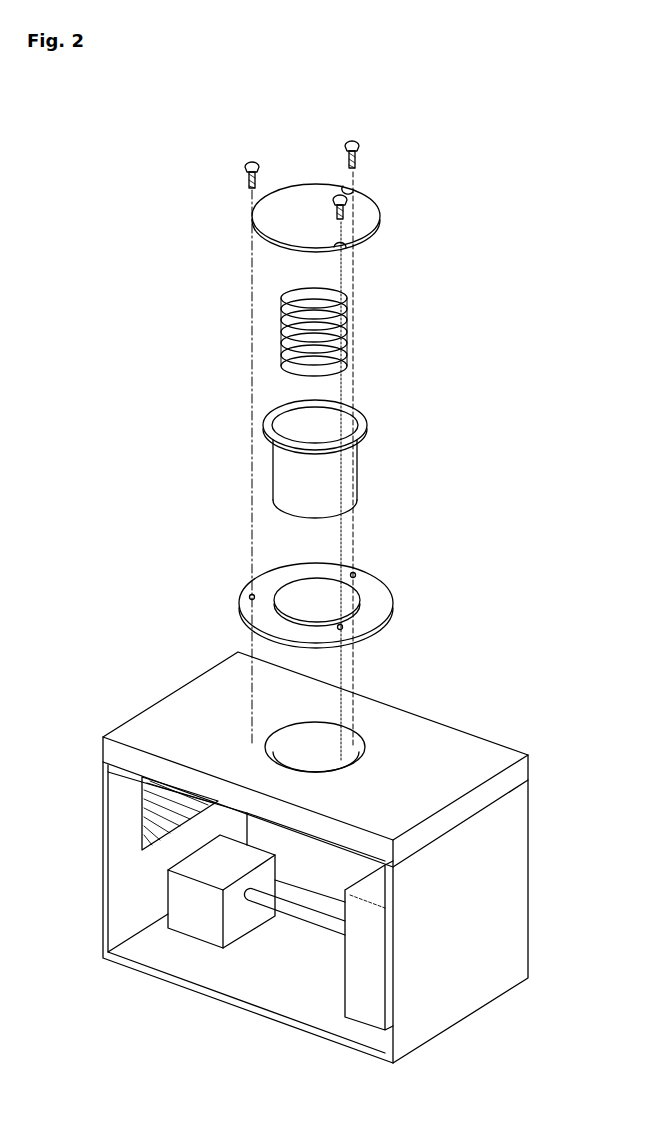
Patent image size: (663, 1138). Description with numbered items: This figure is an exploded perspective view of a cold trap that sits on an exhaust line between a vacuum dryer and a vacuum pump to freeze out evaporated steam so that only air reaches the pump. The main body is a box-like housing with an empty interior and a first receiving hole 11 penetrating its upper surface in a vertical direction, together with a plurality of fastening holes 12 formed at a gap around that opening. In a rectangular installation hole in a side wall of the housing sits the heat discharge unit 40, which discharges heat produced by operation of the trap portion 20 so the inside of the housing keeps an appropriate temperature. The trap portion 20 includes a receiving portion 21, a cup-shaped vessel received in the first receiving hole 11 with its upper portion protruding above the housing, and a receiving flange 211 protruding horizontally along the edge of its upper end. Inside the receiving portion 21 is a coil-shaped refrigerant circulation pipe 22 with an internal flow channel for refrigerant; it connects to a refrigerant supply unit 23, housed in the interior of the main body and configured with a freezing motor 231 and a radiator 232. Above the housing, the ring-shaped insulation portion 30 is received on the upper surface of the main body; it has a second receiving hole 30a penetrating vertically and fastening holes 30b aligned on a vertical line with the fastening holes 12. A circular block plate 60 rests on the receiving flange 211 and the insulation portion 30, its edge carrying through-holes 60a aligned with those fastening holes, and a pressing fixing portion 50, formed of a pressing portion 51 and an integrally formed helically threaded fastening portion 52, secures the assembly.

The first receiving hole 11 is at (286, 854).
The fastening hole 12 is at (361, 734).
The trap portion 20 is at (315, 457).
The receiving portion 21 is at (285, 465).
The receiving flange 211 is at (270, 420).
The refrigerant circulation pipe 22 is at (290, 300).
The refrigerant supply unit 23 is at (262, 972).
The freezing motor 231 is at (205, 930).
The radiator 232 is at (355, 985).
The insulation portion 30 is at (318, 587).
The second receiving hole 30a is at (295, 595).
The fastening hole 30b is at (356, 573).
The heat discharge unit 40 is at (137, 816).
The pressing fixing portion 50 is at (356, 160).
The pressing portion 51 is at (356, 146).
The fastening portion 52 is at (358, 160).
The block plate 60 is at (342, 198).
The through-hole 60a is at (340, 249).